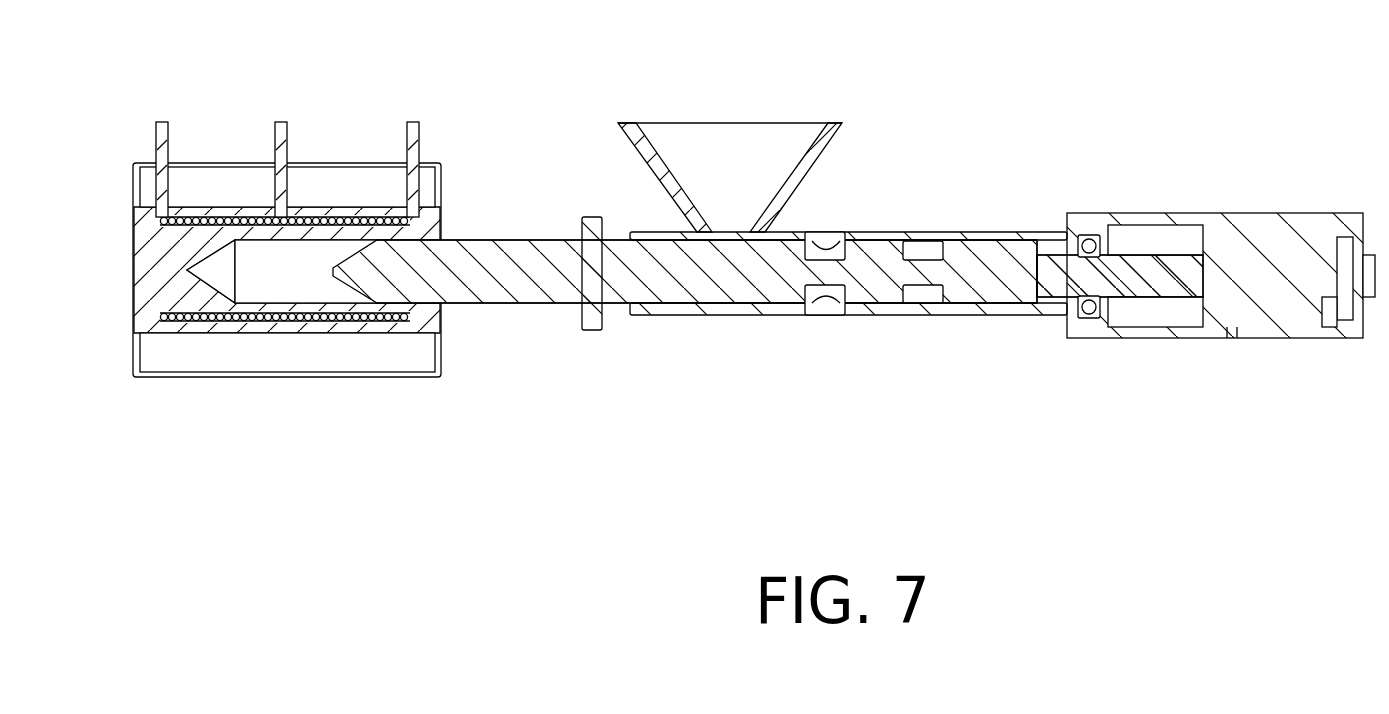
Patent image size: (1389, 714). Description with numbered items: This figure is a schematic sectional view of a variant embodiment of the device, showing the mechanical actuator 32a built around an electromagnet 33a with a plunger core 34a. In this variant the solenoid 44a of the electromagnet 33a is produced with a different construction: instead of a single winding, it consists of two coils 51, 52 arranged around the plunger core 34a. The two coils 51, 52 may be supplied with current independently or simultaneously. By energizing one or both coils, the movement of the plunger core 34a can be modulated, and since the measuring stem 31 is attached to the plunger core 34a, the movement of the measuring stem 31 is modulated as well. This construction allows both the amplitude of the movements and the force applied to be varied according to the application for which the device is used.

The measuring stem 31 is at (760, 277).
The mechanical actuator 32a is at (438, 152).
The electromagnet 33a is at (235, 350).
The plunger core 34a is at (535, 283).
The solenoid 44a is at (323, 313).
The coil 51 is at (237, 215).
The coil 52 is at (350, 215).